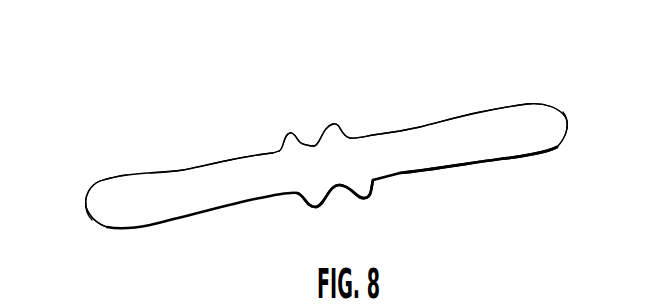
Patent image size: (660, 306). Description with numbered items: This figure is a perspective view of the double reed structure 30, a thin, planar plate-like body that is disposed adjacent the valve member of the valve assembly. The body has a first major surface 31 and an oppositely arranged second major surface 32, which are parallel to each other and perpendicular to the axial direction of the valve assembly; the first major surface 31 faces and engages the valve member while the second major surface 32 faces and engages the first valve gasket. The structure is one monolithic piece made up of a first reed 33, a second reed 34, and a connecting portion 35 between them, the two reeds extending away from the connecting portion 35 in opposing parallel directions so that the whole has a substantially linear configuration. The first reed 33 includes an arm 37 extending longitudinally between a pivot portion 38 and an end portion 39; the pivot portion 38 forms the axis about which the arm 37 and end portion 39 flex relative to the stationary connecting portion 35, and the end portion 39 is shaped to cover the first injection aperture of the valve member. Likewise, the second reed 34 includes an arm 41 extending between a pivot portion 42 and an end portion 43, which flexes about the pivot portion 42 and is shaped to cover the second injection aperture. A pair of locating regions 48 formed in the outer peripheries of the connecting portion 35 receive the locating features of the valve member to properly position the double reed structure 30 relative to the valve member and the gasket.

The double reed structure 30 is at (165, 137).
The first major surface 31 is at (512, 162).
The second major surface 32 is at (528, 123).
The first reed 33 is at (127, 175).
The second reed 34 is at (515, 100).
The connecting portion 35 is at (325, 115).
The arm 37 is at (203, 180).
The pivot portion 38 is at (273, 167).
The end portion 39 is at (85, 210).
The arm 41 is at (450, 133).
The pivot portion 42 is at (380, 147).
The end portion 43 is at (568, 118).
The locating regions 48 is at (313, 147).